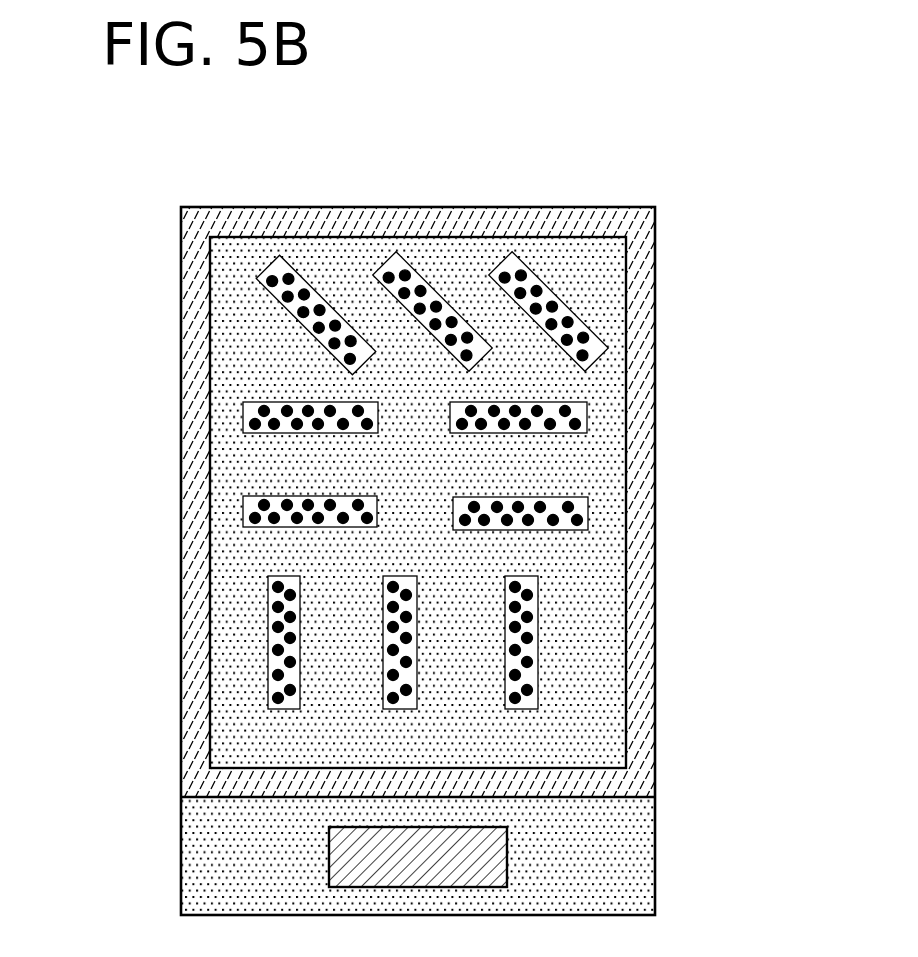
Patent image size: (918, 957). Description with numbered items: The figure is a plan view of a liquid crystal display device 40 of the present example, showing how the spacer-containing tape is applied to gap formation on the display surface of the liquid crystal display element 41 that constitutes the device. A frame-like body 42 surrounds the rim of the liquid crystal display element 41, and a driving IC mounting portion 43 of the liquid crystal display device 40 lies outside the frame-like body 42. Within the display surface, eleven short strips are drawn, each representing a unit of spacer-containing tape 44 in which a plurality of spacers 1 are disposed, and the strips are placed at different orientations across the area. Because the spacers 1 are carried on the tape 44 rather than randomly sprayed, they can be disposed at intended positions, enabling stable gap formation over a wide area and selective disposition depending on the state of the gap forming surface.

The spacer 1 is at (580, 425).
The liquid crystal display device 40 is at (73, 668).
The liquid crystal display element 41 is at (253, 668).
The frame-like body 42 is at (192, 743).
The driving IC mounting portion 43 is at (330, 855).
The spacer-containing tape 44 is at (588, 403).